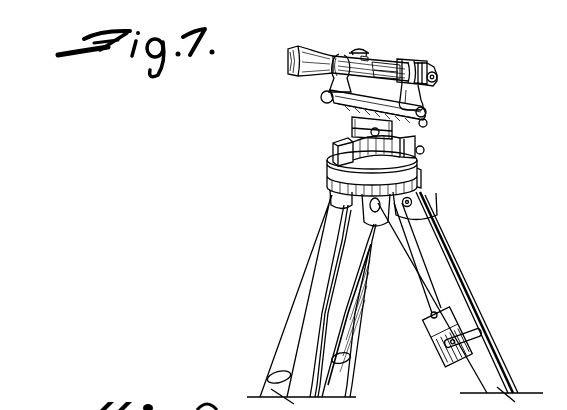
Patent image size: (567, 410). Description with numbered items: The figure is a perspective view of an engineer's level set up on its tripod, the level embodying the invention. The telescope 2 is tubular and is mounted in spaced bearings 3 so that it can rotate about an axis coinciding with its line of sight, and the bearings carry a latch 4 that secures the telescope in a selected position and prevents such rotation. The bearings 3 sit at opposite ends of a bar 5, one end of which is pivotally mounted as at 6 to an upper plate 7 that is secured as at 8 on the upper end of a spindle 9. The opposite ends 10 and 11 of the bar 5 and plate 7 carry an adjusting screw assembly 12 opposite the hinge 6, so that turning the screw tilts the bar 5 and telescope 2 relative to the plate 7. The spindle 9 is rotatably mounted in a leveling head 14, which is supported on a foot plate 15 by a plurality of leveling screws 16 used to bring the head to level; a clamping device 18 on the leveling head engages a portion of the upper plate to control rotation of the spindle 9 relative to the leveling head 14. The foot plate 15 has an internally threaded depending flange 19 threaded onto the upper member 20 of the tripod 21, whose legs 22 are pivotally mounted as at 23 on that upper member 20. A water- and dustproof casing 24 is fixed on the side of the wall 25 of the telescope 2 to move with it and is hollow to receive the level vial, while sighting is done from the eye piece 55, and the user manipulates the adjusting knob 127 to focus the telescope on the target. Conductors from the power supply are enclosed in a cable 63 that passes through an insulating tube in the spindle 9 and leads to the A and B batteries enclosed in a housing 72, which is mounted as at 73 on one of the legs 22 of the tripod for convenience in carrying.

The telescope 2 is at (333, 46).
The spaced bearings 3 is at (341, 54).
The latch 4 is at (360, 49).
The bar 5 is at (329, 91).
The pivot (hinge) 6 is at (321, 99).
The upper plate 7 is at (359, 112).
The securing point 8 is at (350, 117).
The spindle 9 is at (351, 128).
The end of bar 10 is at (424, 103).
The end of plate 11 is at (432, 115).
The adjusting screw assembly 12 is at (428, 124).
The leveling head 14 is at (425, 149).
The foot plate 15 is at (333, 193).
The leveling screws 16 is at (363, 172).
The clamping device 18 is at (335, 147).
The depending flange 19 is at (436, 193).
The upper member of tripod 20 is at (422, 182).
The tripod 21 is at (447, 242).
The legs 22 is at (307, 289).
The pivot mounting of legs 23 is at (366, 210).
The casing 24 is at (384, 66).
The wall of telescope 25 is at (414, 66).
The eye piece 55 is at (439, 78).
The cable 63 is at (426, 70).
The housing 72 is at (439, 333).
The mounting of housing 73 is at (445, 324).
The adjusting knob 127 is at (364, 54).